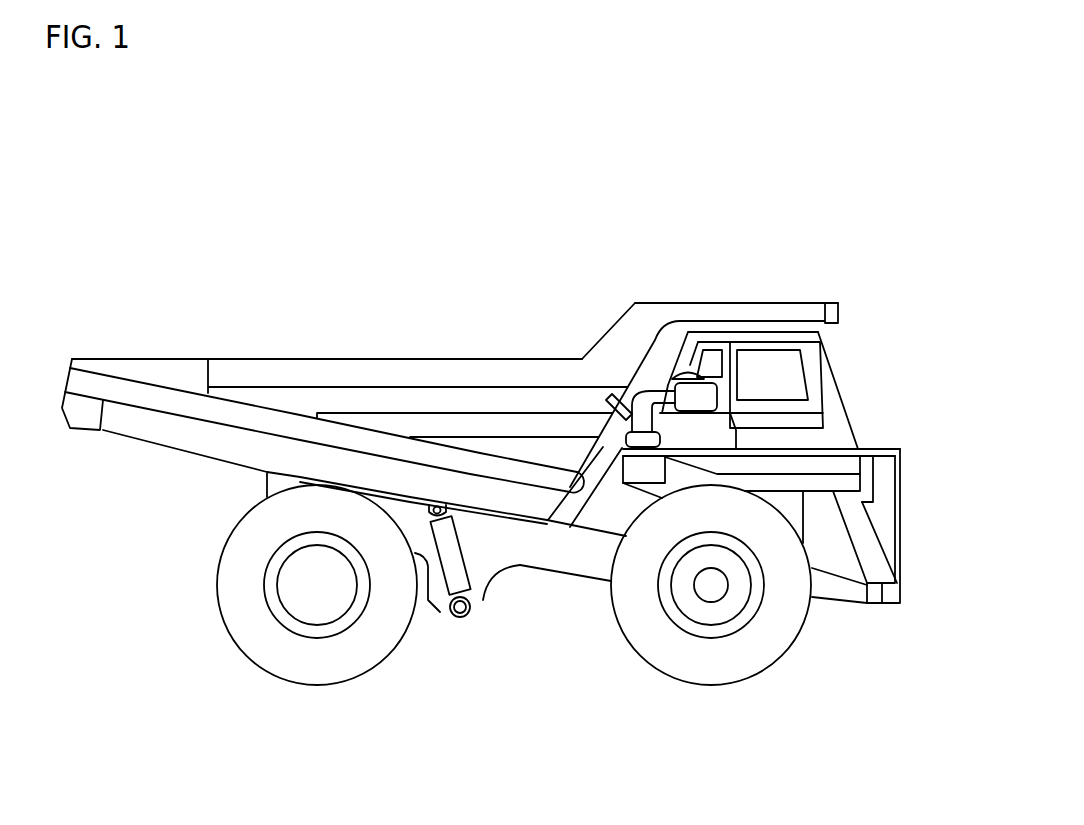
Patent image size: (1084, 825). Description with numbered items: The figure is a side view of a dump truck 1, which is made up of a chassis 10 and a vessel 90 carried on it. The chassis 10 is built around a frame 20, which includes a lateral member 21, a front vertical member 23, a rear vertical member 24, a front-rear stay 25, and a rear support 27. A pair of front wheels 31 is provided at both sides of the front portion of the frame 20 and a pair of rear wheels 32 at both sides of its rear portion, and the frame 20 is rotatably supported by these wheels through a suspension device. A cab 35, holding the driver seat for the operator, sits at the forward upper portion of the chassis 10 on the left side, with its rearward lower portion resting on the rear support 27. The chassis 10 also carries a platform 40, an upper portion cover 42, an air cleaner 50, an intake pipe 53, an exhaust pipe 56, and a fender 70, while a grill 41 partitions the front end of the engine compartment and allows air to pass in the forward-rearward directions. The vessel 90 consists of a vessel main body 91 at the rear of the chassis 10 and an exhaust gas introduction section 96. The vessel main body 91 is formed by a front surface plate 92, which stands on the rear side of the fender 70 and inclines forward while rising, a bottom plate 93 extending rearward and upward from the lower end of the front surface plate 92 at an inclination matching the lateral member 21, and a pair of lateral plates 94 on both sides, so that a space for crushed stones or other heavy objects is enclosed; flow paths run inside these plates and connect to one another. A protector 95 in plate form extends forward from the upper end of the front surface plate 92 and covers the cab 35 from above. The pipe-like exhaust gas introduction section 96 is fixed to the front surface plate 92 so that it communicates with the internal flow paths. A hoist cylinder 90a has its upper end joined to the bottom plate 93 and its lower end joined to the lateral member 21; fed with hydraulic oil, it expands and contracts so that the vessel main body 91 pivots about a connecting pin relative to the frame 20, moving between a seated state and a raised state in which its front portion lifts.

The dump truck 1 is at (118, 188).
The chassis 10 is at (878, 327).
The frame 20 is at (490, 611).
The lateral member 21 is at (543, 553).
The front vertical member 23 is at (878, 557).
The rear vertical member 24 is at (680, 485).
The front-rear stay 25 is at (800, 478).
The rear support 27 is at (633, 490).
The front wheels 31 is at (772, 648).
The rear wheels 32 is at (268, 641).
The cab 35 is at (818, 342).
The platform 40 is at (830, 448).
The grill 41 is at (907, 498).
The upper portion cover 42 is at (713, 426).
The air cleaner 50 is at (713, 362).
The intake pipe 53 is at (681, 308).
The exhaust pipe 56 is at (650, 452).
The fender 70 is at (603, 458).
The vessel 90 is at (312, 348).
The hoist cylinder 90a is at (448, 615).
The vessel main body 91 is at (355, 352).
The front surface plate 92 is at (563, 474).
The bottom plate 93 is at (380, 494).
The lateral plate 94 is at (256, 368).
The protector 95 is at (681, 318).
The exhaust gas introduction section 96 is at (620, 418).